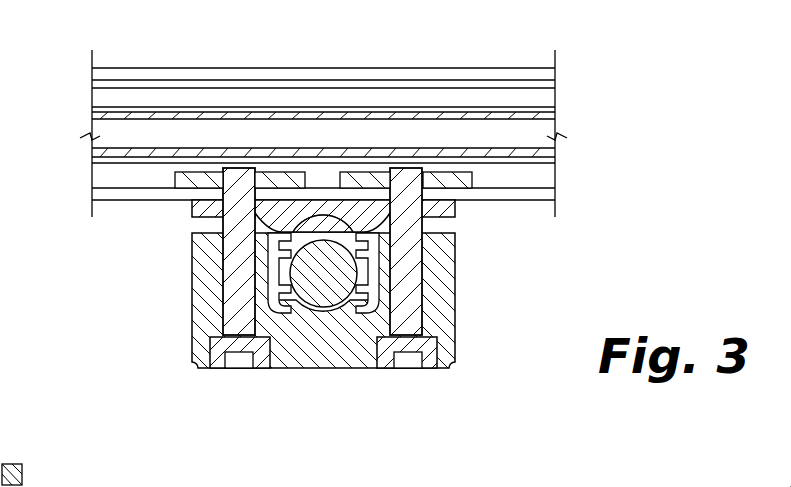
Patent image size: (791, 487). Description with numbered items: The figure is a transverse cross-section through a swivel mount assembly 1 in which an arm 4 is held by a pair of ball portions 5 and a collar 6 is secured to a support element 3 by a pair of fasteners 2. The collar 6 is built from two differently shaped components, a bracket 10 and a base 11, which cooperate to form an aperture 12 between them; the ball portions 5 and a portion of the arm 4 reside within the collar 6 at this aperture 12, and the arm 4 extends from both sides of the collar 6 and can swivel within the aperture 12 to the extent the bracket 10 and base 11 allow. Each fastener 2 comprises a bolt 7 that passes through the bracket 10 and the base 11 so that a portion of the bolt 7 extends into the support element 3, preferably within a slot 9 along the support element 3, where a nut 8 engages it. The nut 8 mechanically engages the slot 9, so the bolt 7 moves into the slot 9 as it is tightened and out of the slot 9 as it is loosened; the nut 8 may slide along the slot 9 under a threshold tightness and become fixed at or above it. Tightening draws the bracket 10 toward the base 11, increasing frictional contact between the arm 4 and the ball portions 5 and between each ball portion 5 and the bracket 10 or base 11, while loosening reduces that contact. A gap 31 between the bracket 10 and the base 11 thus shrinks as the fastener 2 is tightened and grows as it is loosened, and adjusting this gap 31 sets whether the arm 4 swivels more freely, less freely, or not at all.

The swivel mount assembly 1 is at (286, 325).
The fastener 2 is at (427, 268).
The support element 3 is at (278, 68).
The arm 4 is at (295, 273).
The ball portions 5 is at (292, 235).
The collar 6 is at (535, 268).
The bolt 7 is at (240, 358).
The nut 8 is at (197, 180).
The slot 9 is at (100, 173).
The bracket 10 is at (365, 347).
The base 11 is at (193, 208).
The aperture 12 is at (455, 335).
The gap 31 is at (210, 226).